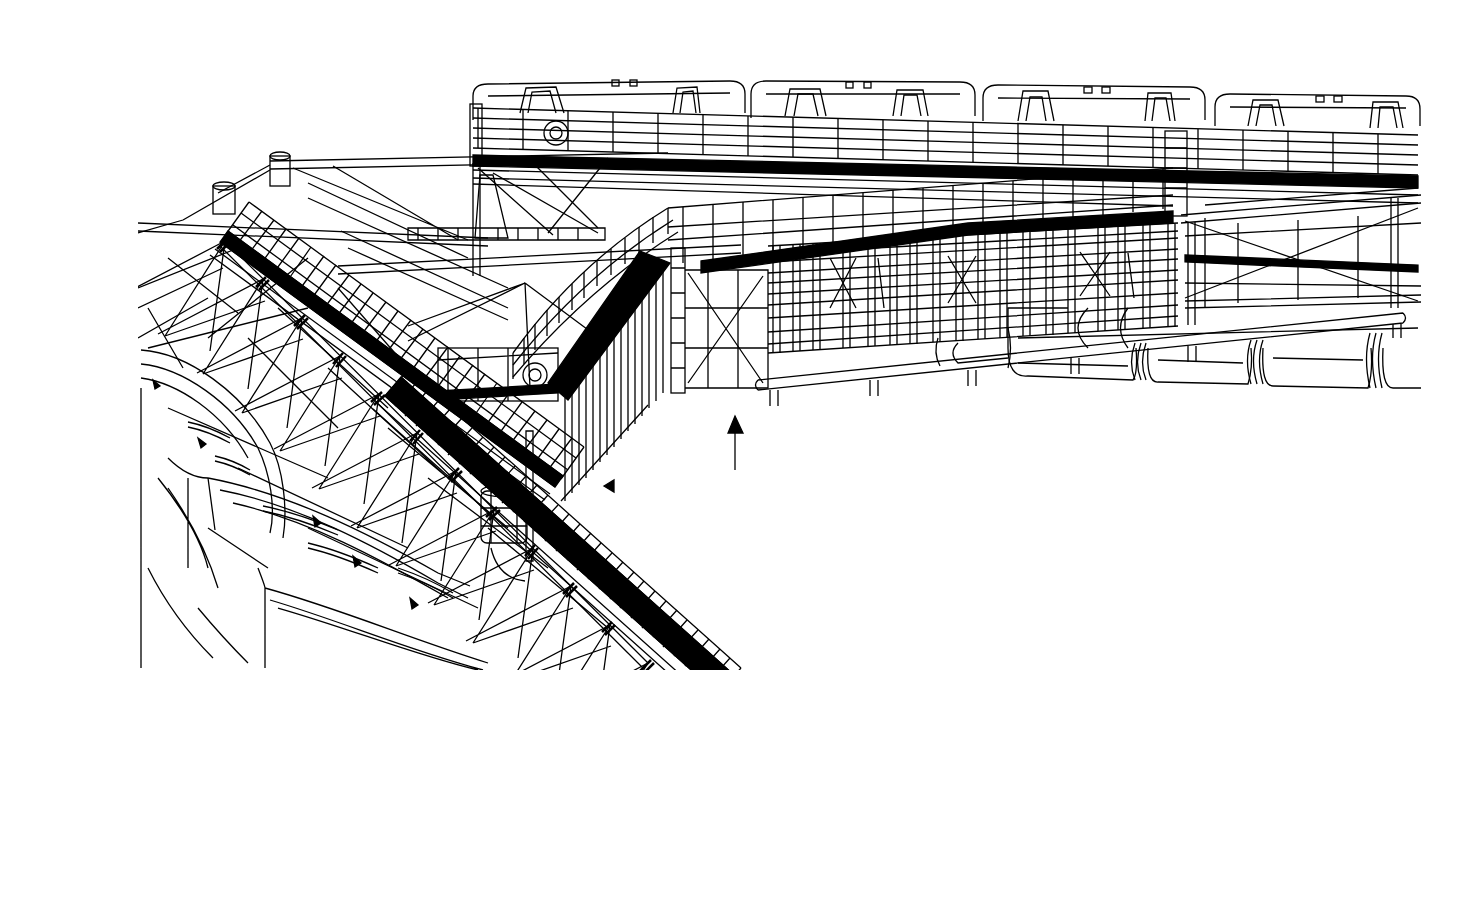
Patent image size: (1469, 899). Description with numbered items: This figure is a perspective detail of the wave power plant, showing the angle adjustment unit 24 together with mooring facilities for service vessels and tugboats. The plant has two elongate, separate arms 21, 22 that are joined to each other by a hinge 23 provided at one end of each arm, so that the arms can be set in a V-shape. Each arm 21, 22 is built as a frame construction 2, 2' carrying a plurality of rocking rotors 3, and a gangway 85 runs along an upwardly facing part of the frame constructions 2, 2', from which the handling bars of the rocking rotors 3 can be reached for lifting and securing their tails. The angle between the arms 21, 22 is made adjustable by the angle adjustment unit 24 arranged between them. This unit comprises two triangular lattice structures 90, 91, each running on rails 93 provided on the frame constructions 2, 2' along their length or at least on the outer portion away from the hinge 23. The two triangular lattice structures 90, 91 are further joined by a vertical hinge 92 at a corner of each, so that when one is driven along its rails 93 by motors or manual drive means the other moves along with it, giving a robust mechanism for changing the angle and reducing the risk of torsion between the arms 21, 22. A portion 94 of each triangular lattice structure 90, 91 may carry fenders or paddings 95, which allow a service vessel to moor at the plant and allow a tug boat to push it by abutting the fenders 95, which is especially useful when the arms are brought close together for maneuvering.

The frame construction 2 is at (662, 209).
The frame construction 2' is at (475, 472).
The rocking rotor 3 is at (585, 76).
The arm 21 is at (1033, 61).
The arm 22 is at (165, 178).
The hinge 23 is at (278, 147).
The angle adjustment unit 24 is at (742, 455).
The gangway 85 is at (474, 96).
The triangular lattice structure 90 is at (905, 378).
The triangular lattice structure 91 is at (622, 491).
The vertical hinge 92 is at (671, 380).
The rail 93 is at (1395, 196).
The portion 94 is at (628, 423).
The fender 95 is at (785, 372).